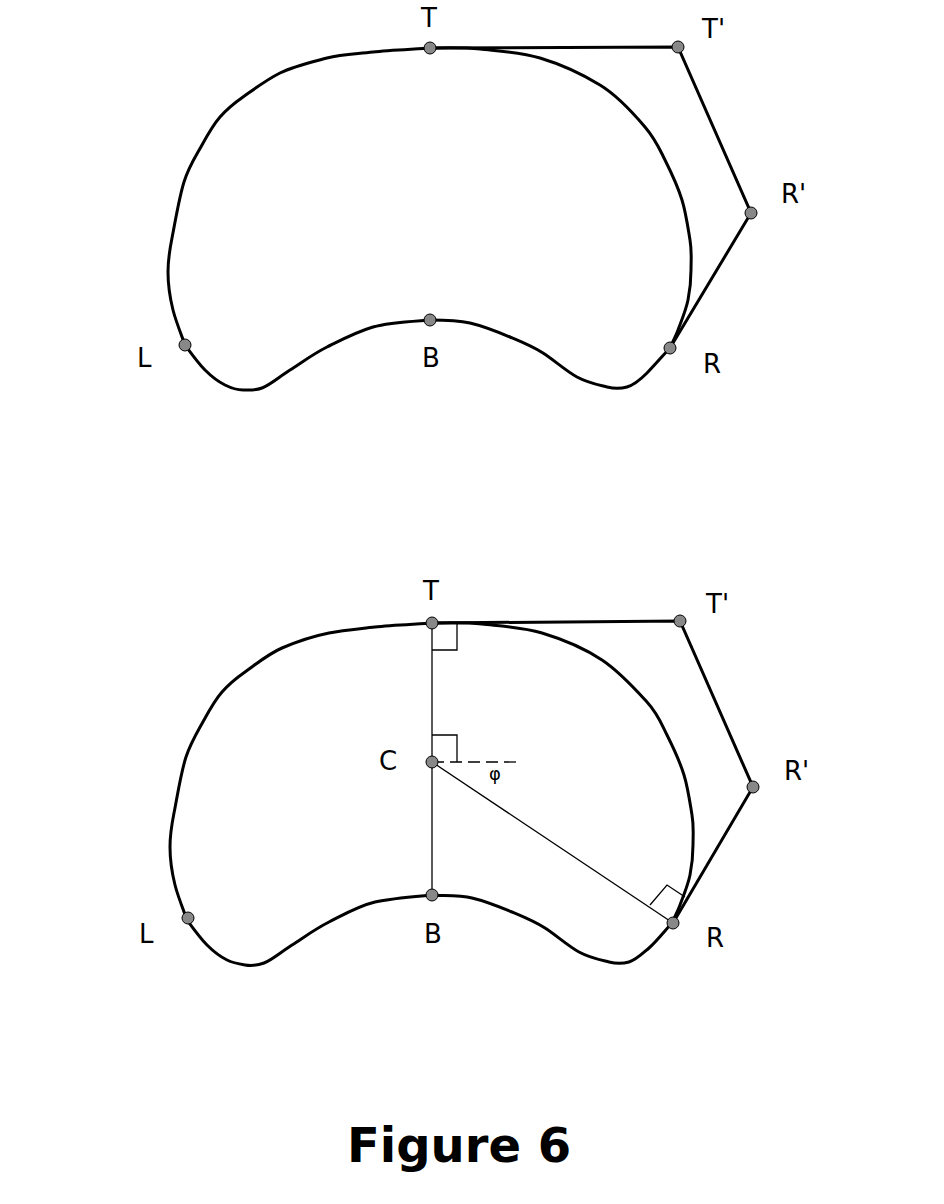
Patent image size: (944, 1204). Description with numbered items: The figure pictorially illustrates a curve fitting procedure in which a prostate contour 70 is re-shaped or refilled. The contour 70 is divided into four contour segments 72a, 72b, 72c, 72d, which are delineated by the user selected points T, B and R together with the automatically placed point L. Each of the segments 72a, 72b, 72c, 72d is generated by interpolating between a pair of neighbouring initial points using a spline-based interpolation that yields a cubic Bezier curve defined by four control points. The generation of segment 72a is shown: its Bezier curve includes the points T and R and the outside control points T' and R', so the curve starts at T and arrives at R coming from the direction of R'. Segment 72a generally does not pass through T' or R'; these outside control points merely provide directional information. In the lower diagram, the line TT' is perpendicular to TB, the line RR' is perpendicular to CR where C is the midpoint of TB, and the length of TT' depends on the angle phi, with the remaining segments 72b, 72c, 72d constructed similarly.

The contour 70 is at (420, 499).
The contour segment 72a is at (668, 127).
The contour segment 72b is at (543, 367).
The contour segment 72c is at (265, 395).
The contour segment 72d is at (160, 172).